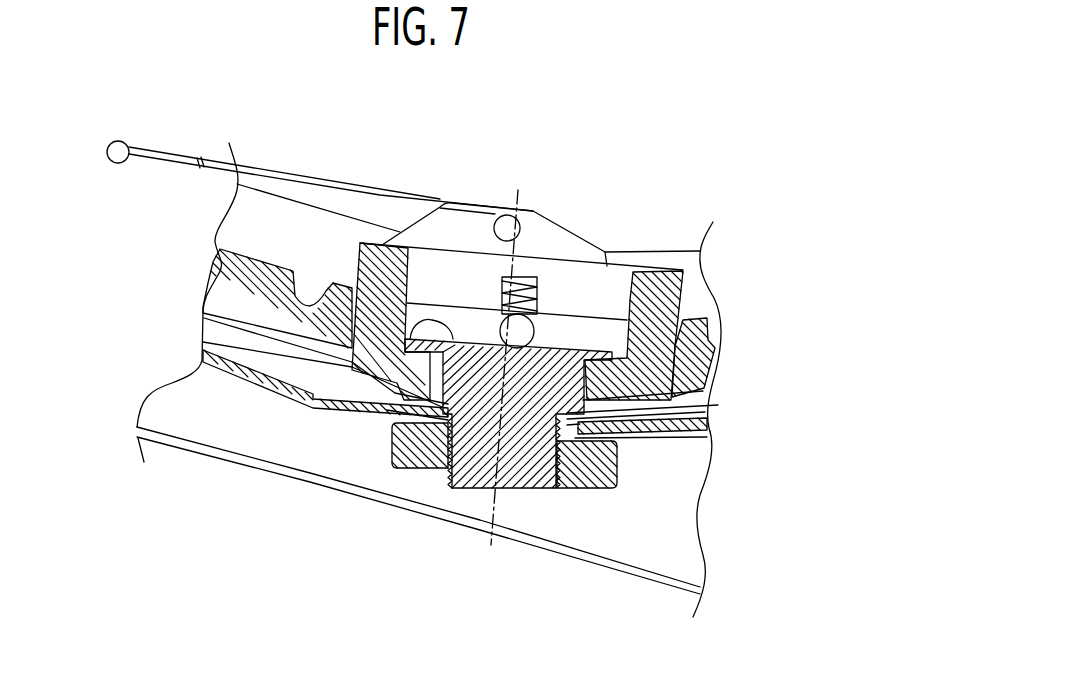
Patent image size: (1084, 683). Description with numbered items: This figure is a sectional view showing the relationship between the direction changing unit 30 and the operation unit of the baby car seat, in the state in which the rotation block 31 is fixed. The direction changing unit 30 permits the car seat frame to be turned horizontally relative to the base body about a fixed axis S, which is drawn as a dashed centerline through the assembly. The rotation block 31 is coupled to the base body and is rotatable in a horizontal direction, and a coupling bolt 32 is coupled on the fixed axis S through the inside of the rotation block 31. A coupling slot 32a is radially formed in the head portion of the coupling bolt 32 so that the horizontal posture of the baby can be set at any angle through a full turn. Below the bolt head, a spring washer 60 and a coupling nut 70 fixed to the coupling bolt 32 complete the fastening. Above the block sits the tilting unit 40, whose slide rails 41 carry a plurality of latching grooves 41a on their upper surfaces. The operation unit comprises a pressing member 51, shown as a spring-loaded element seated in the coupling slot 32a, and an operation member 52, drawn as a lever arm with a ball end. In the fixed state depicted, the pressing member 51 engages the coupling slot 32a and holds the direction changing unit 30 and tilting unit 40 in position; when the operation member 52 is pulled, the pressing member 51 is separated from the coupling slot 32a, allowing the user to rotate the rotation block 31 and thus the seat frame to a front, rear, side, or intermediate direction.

The direction changing unit 30 is at (240, 546).
The rotation block 31 is at (368, 347).
The coupling bolt 32 is at (445, 456).
The coupling slot 32a is at (412, 337).
The tilting unit 40 is at (352, 114).
The slide rail 41 is at (253, 283).
The latching groove 41a is at (309, 300).
The pressing member 51 is at (530, 331).
The operation member 52 is at (384, 188).
The spring washer 60 is at (690, 437).
The coupling nut 70 is at (615, 470).
The fixed axis S is at (487, 550).